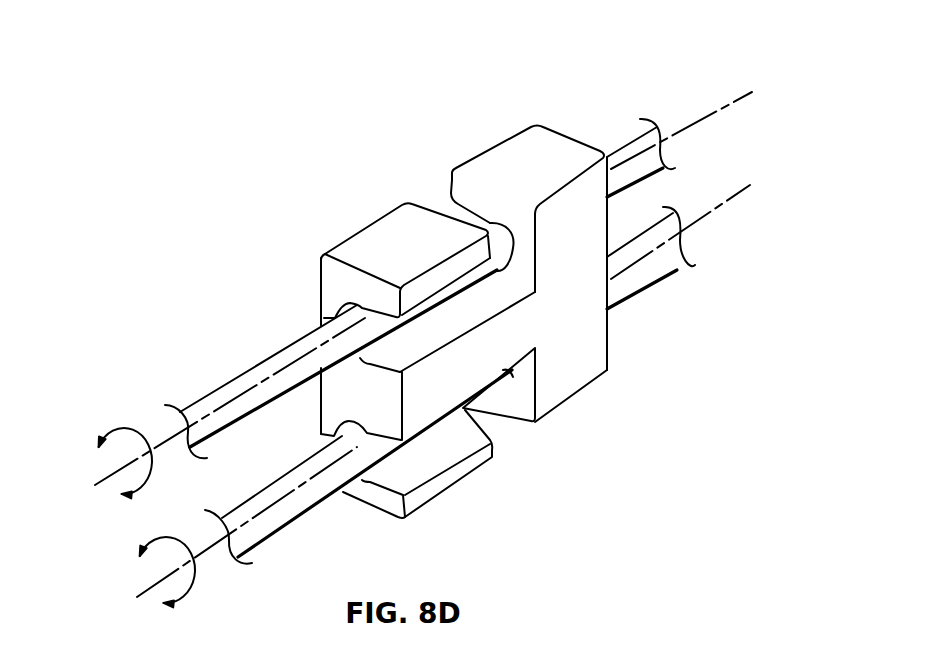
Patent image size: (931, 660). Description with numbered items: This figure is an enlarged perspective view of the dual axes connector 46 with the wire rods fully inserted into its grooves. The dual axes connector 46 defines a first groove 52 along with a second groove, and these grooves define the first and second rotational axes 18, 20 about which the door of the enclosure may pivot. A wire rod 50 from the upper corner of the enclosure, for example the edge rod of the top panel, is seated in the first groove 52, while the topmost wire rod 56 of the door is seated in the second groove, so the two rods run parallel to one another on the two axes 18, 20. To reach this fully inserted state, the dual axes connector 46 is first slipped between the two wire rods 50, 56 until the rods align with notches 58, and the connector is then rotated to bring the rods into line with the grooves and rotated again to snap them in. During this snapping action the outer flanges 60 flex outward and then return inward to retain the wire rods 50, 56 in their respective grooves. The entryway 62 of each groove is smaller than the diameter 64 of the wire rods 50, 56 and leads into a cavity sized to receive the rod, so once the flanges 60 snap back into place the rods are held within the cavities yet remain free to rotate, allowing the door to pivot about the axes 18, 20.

The first rotational axis 18 is at (110, 471).
The second rotational axis 20 is at (155, 579).
The dual axes connector 46 is at (433, 120).
The wire rod 50 is at (617, 150).
The first groove 52 is at (353, 320).
The wire rod 56 is at (660, 283).
The notch 58 is at (437, 195).
The outer flange 60 is at (507, 150).
The entryway 62 is at (496, 287).
The diameter 64 is at (260, 473).